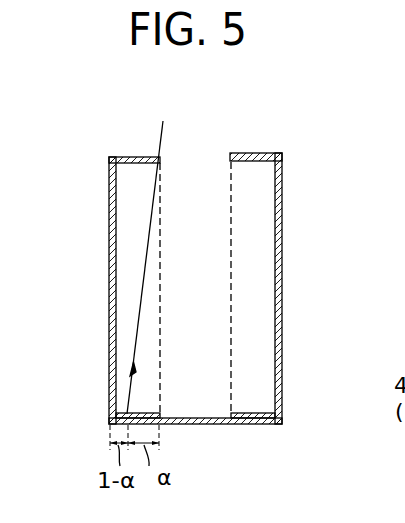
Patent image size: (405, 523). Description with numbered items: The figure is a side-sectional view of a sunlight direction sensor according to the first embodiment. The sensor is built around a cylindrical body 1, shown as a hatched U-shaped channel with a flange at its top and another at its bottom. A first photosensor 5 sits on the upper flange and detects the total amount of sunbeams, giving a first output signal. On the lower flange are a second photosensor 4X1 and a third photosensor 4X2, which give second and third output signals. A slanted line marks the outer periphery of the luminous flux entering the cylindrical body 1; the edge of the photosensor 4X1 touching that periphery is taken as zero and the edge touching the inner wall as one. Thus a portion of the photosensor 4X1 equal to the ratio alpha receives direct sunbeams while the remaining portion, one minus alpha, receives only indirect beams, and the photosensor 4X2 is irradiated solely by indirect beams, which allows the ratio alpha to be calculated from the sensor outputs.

The cylindrical body 1 is at (283, 285).
The photosensor 5 is at (254, 153).
The photosensor 4X1 is at (123, 413).
The photosensor 4X2 is at (256, 413).